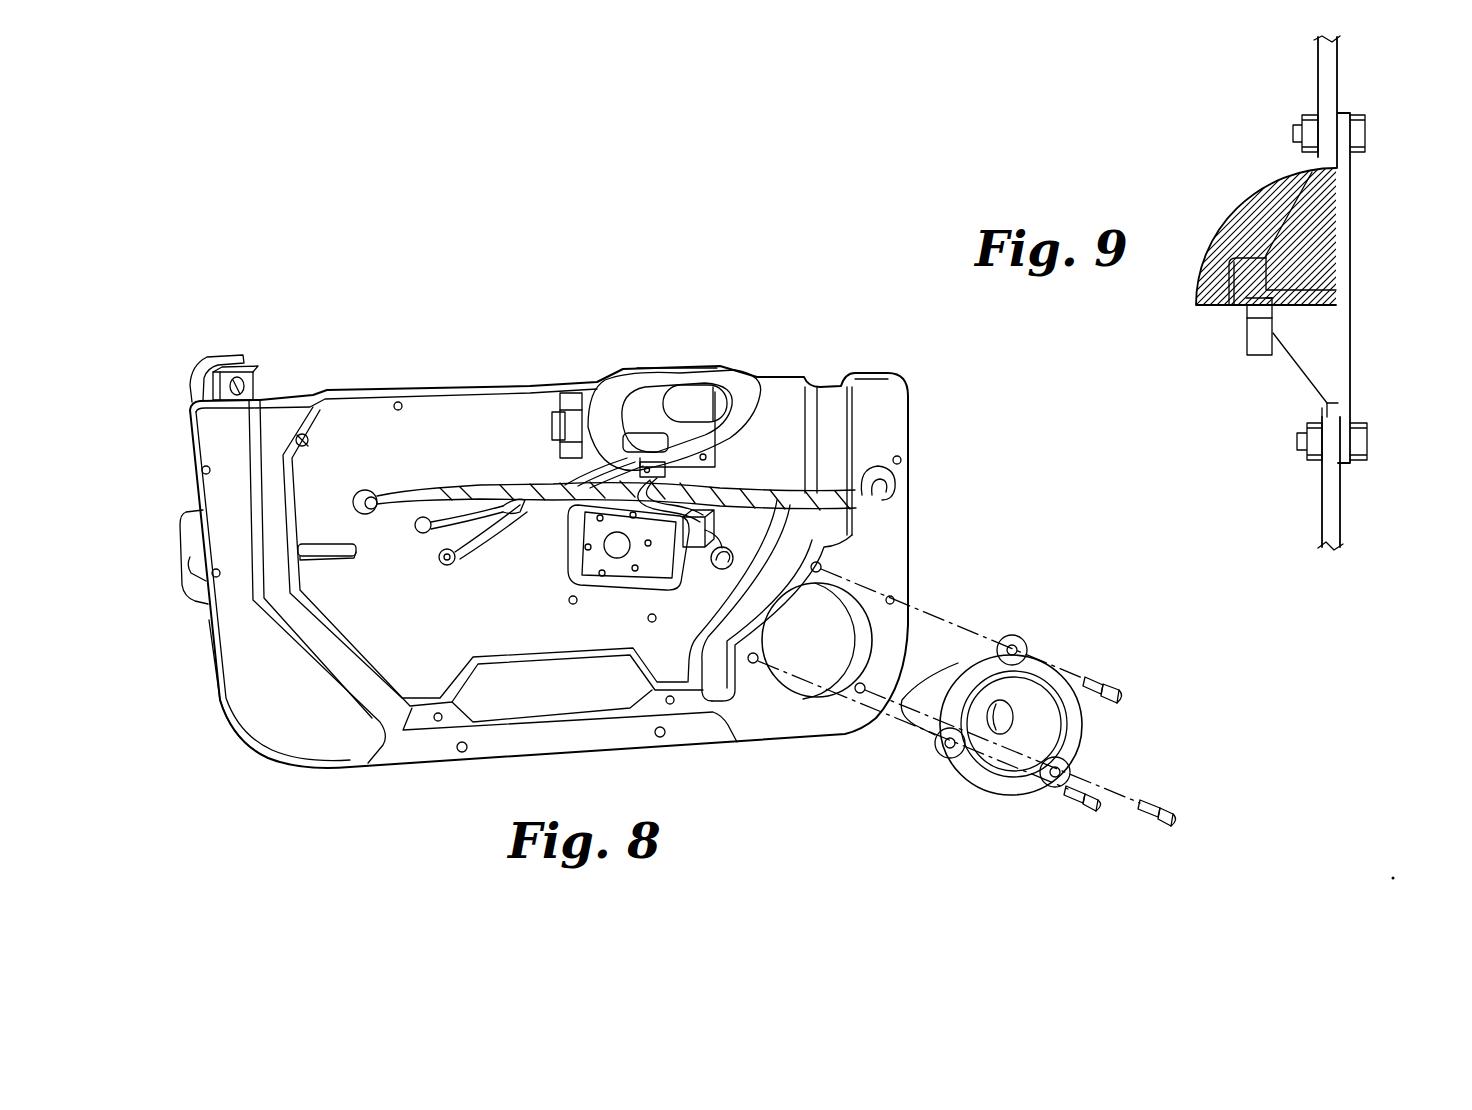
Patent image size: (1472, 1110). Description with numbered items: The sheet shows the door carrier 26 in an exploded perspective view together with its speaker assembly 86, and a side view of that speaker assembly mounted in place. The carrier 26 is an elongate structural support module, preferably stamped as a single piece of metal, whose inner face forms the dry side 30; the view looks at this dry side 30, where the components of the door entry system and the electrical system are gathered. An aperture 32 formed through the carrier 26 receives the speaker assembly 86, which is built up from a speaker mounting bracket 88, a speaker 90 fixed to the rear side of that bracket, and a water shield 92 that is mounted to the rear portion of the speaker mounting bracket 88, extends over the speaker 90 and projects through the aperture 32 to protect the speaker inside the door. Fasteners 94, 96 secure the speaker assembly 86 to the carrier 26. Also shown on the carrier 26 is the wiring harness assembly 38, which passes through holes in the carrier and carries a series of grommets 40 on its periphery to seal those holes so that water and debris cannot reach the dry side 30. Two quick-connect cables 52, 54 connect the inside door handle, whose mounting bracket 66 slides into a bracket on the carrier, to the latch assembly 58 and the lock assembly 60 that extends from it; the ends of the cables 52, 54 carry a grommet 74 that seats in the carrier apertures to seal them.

In FIG. 8, the carrier 26 is at (546, 353).
In FIG. 9, the carrier 26 is at (1337, 72).
In FIG. 8, the dry side surface 30 is at (250, 706).
In FIG. 8, the aperture 32 is at (821, 568).
In FIG. 9, the aperture 32 is at (1318, 408).
In FIG. 8, the wiring harness assembly 38 is at (838, 470).
In FIG. 8, the grommets 40 is at (893, 478).
In FIG. 8, the cable 52 is at (478, 490).
In FIG. 8, the cable 54 is at (470, 546).
In FIG. 8, the latch assembly 58 is at (190, 538).
In FIG. 8, the lock assembly 60 is at (222, 352).
In FIG. 8, the mounting bracket 66 is at (558, 430).
In FIG. 8, the grommet 74 is at (440, 570).
In FIG. 8, the speaker assembly 86 is at (984, 796).
In FIG. 9, the speaker assembly 86 is at (1220, 316).
In FIG. 9, the speaker mounting bracket 88 is at (1350, 288).
In FIG. 9, the speaker 90 is at (1288, 368).
In FIG. 9, the water shield 92 is at (1237, 218).
In FIG. 8, the fastener 94 is at (1100, 675).
In FIG. 9, the fastener 94 is at (1366, 133).
In FIG. 8, the fastener 96 is at (1075, 803).
In FIG. 9, the fastener 96 is at (1370, 442).